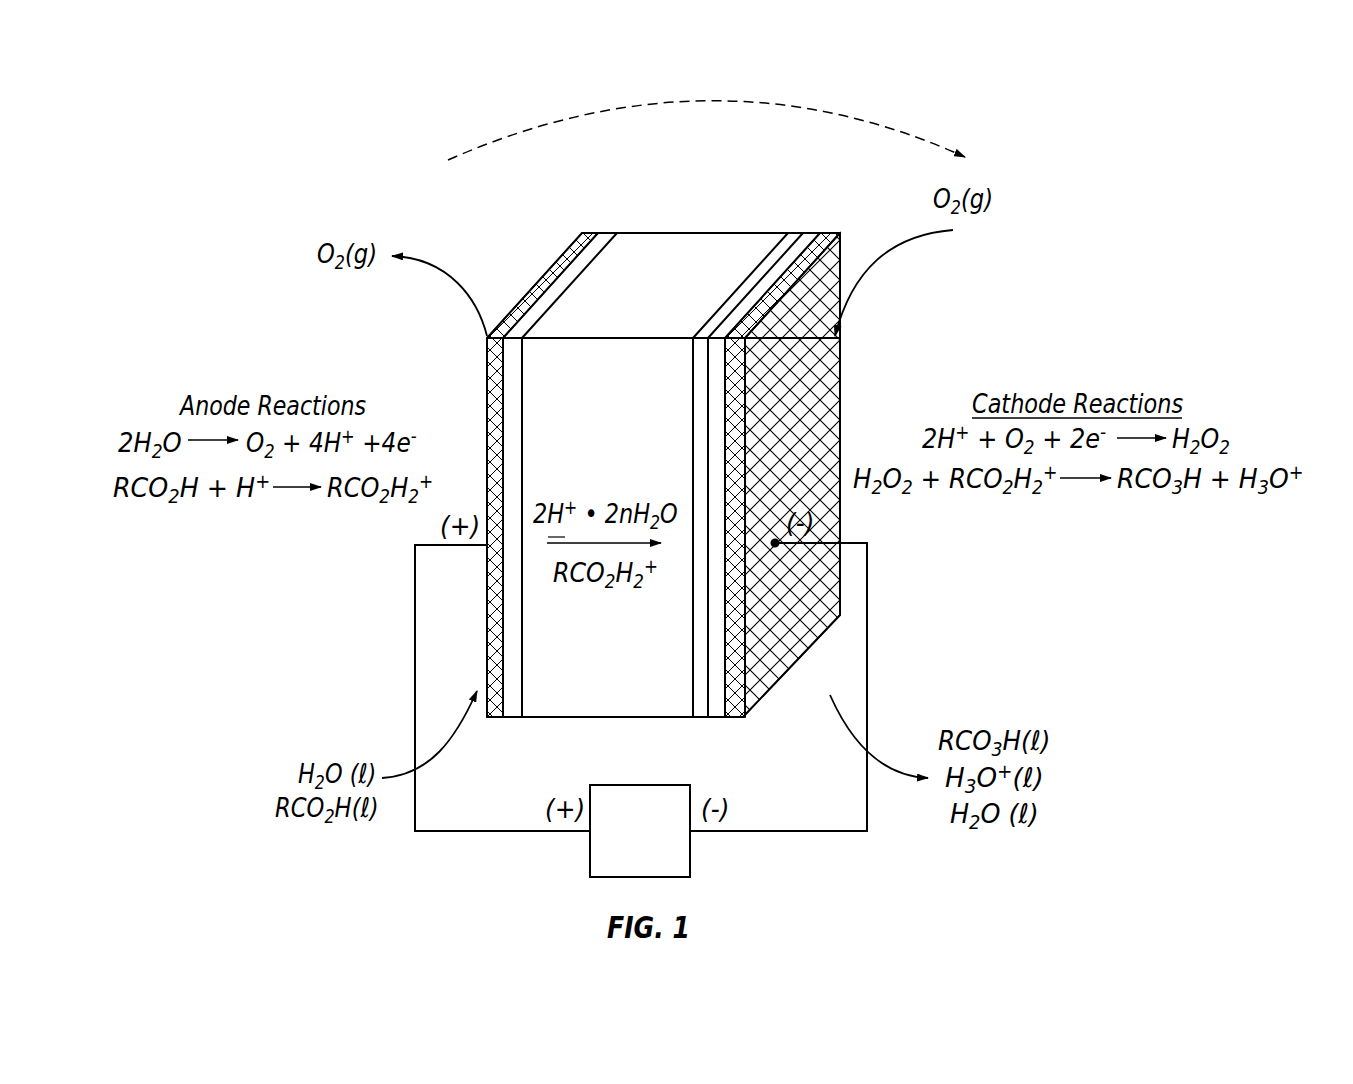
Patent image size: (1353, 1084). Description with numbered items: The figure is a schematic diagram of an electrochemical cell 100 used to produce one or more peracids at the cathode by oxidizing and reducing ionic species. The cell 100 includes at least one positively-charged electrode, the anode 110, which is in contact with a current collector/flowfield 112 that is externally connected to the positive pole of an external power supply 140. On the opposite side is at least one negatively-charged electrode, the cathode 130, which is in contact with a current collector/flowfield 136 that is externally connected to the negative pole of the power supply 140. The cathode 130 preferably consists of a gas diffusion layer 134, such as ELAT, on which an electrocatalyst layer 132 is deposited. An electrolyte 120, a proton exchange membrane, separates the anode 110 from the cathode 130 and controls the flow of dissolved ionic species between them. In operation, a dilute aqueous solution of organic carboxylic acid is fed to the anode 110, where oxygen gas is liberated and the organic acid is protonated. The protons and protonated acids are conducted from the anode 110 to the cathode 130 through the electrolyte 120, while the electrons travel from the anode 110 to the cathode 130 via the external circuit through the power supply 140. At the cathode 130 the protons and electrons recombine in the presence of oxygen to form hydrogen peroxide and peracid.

The electrochemical cell 100 is at (702, 417).
The anode 110 is at (607, 233).
The current collector/flowfield 112 is at (558, 262).
The electrolyte 120 is at (687, 233).
The cathode 130 is at (764, 453).
The electrocatalyst layer 132 is at (702, 438).
The gas diffusion layer 134 is at (720, 472).
The current collector/flowfield 136 is at (833, 382).
The power supply 140 is at (640, 785).